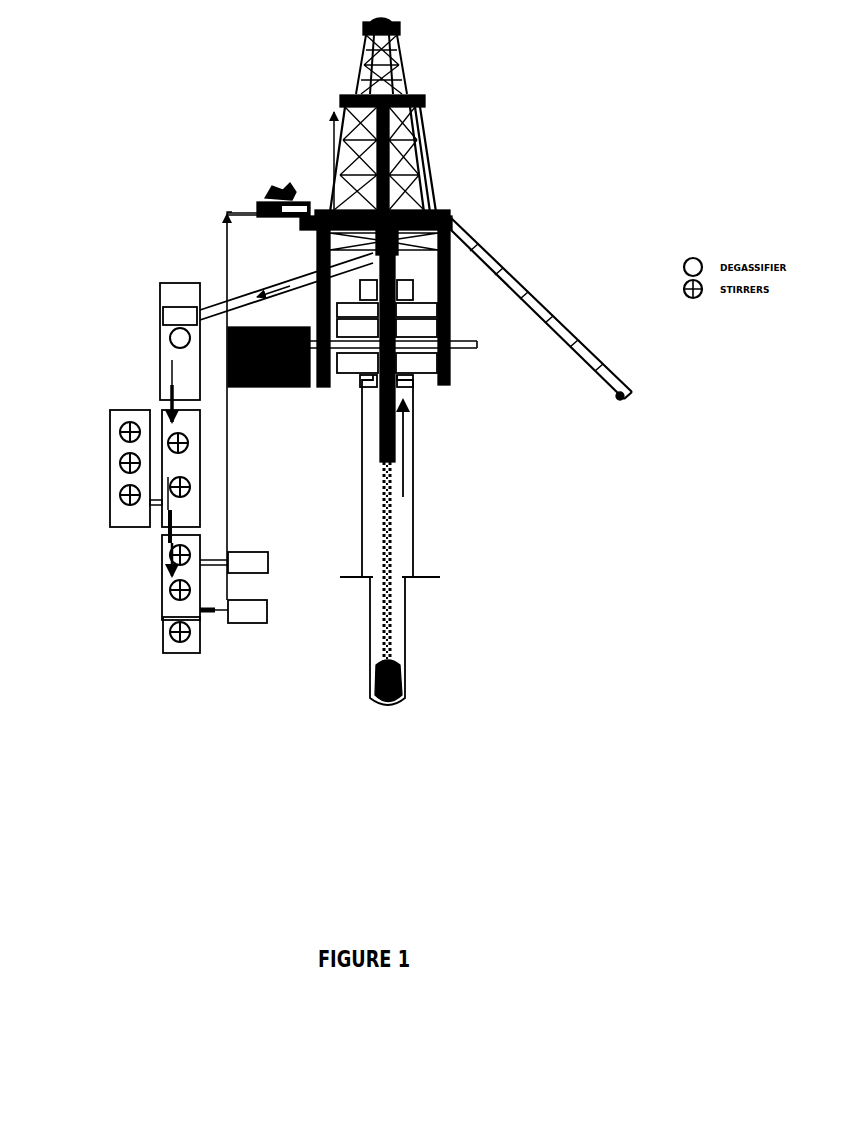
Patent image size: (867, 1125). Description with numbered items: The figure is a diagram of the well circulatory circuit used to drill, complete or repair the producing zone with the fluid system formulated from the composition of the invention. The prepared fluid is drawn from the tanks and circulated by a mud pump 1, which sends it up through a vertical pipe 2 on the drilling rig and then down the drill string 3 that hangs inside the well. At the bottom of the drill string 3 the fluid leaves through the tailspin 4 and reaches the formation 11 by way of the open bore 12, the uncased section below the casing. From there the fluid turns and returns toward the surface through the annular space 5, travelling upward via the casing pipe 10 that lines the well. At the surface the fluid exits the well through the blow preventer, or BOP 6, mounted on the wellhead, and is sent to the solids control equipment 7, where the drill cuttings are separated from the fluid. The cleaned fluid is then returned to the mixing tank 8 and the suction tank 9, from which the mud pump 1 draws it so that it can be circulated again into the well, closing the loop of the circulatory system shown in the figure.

The mud pump 1 is at (247, 625).
The vertical pipe 2 is at (327, 149).
The drill string 3 is at (400, 513).
The tailspin 4 is at (380, 700).
The annular space 5 is at (407, 465).
The blow preventer (BOP) 6 is at (418, 327).
The solids control equipment 7 is at (159, 320).
The mixing tank 8 is at (159, 452).
The suction tank 9 is at (159, 597).
The casing pipe 10 is at (416, 547).
The formation 11 is at (484, 680).
The open bore 12 is at (408, 623).